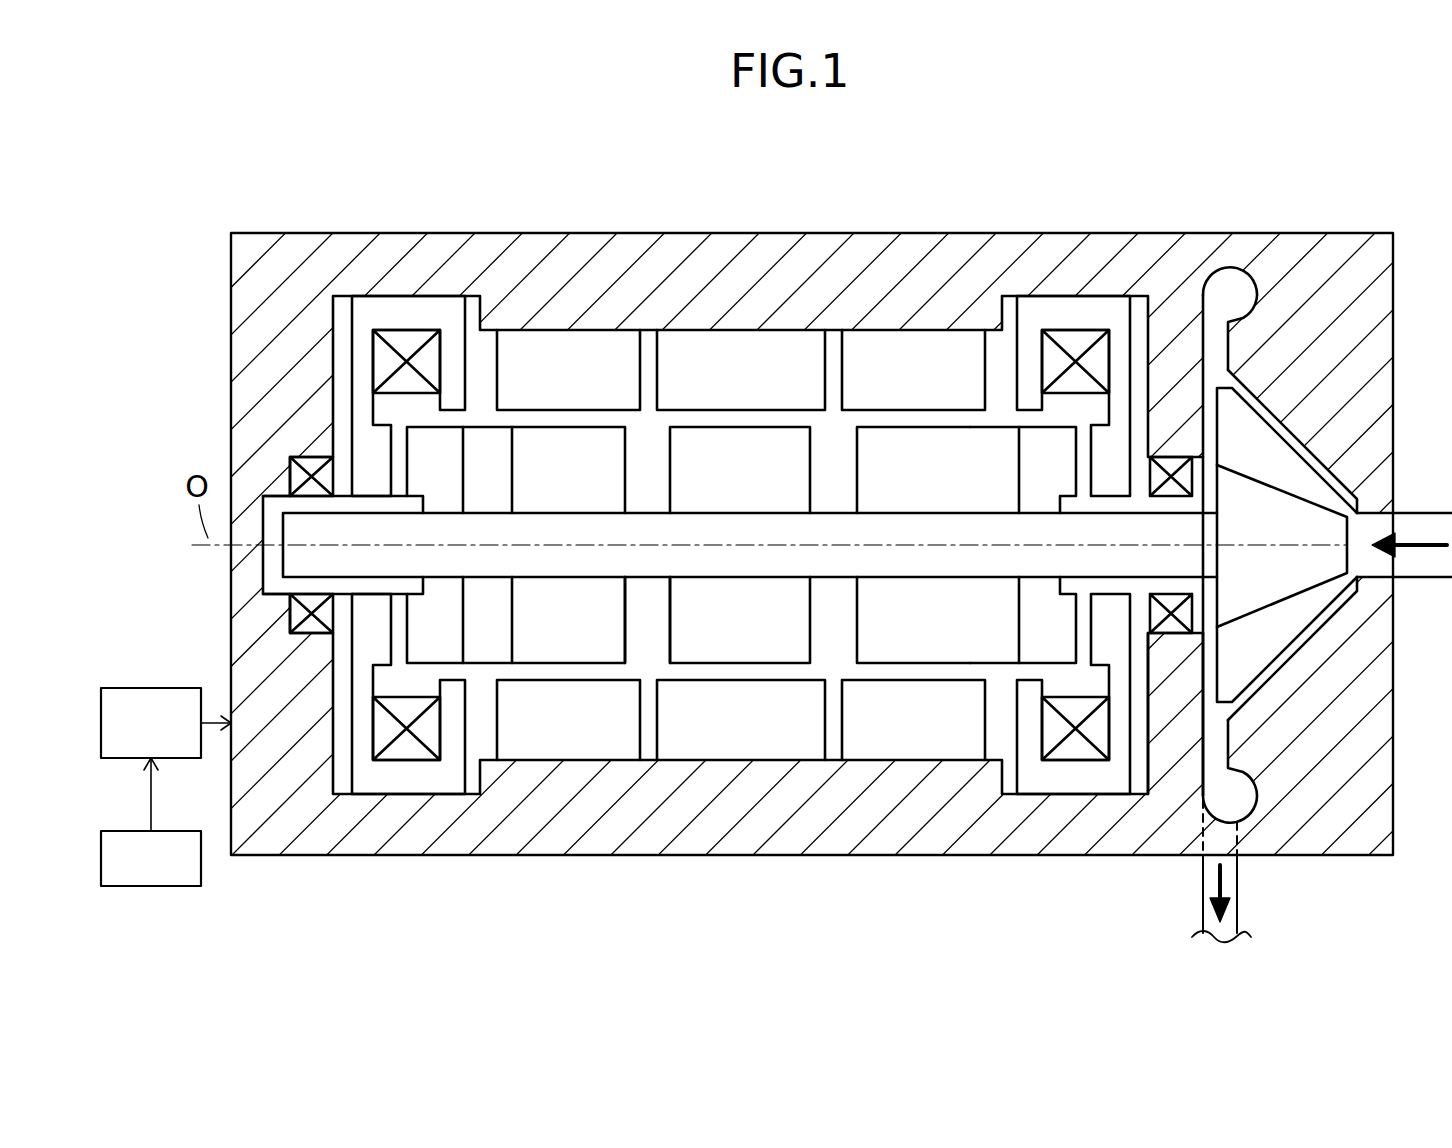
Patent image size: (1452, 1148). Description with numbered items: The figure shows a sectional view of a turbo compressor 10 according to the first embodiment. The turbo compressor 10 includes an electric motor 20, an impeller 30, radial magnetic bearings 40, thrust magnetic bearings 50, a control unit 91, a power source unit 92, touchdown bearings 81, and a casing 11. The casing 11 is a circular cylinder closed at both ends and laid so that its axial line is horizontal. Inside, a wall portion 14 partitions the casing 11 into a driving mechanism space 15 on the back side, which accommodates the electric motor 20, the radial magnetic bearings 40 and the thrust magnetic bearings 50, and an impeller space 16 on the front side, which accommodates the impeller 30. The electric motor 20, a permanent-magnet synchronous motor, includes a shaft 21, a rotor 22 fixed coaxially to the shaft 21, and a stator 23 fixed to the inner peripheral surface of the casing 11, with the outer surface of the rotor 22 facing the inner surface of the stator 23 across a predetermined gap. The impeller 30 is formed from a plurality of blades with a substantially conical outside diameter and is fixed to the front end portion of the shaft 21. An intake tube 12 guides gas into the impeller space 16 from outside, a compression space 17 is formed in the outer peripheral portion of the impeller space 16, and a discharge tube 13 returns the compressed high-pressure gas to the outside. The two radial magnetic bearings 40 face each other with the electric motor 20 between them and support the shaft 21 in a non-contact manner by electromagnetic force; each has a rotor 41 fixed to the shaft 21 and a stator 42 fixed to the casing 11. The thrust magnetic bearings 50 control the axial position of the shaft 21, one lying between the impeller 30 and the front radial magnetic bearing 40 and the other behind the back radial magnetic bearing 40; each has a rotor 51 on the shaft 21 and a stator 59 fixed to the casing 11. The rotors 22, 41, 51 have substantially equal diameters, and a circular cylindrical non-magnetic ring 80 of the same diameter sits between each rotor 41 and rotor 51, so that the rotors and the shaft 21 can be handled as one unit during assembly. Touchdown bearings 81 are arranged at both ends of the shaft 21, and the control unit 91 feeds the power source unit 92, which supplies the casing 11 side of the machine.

The turbo compressor 10 is at (1394, 211).
The casing 11 is at (822, 230).
The intake tube 12 is at (1418, 566).
The discharge tube 13 is at (1233, 882).
The wall portion 14 is at (1175, 733).
The driving mechanism space 15 is at (648, 642).
The impeller space 16 is at (1307, 458).
The compression space 17 is at (1230, 290).
The electric motor 20 is at (769, 554).
The shaft 21 is at (765, 560).
The rotor 22 is at (722, 642).
The stator 23 is at (806, 735).
The impeller 30 is at (1327, 503).
The radial magnetic bearing 40 is at (741, 554).
The rotor 41 is at (582, 642).
The stator 42 is at (534, 727).
The thrust magnetic bearing 50 is at (741, 568).
The rotor 51 is at (452, 642).
The stator 59 is at (401, 777).
The non-magnetic ring 80 is at (487, 453).
The touchdown bearing 81 is at (310, 455).
The control unit 91 is at (126, 829).
The power source unit 92 is at (152, 686).